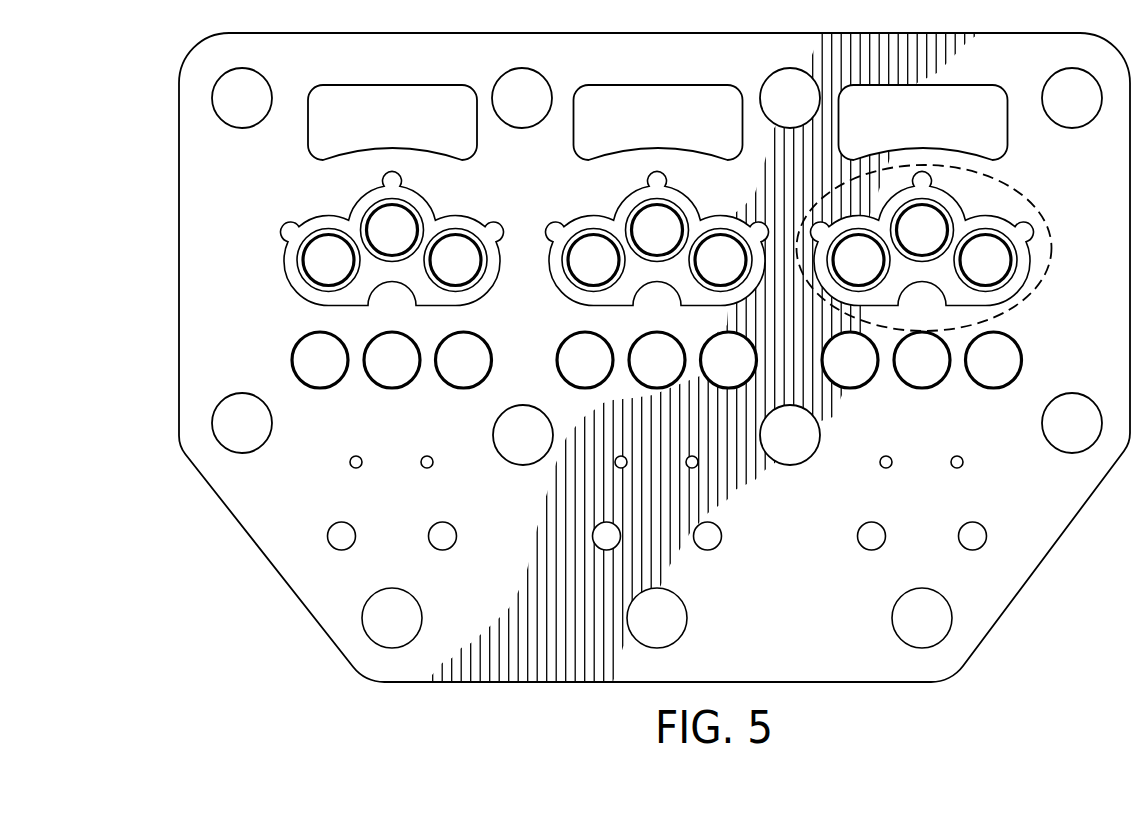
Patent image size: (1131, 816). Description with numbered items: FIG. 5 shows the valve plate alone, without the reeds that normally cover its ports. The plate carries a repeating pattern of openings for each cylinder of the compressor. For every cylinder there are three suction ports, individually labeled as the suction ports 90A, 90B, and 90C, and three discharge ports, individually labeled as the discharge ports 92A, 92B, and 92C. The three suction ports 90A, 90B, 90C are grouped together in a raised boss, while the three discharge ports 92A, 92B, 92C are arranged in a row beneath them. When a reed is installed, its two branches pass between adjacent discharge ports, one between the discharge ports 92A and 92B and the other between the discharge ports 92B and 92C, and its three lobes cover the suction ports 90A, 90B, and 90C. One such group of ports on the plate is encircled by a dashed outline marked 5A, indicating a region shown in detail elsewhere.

The suction port 90A is at (326, 263).
The suction port 90B is at (392, 230).
The suction port 90C is at (457, 262).
The discharge port 92A is at (322, 356).
The discharge port 92B is at (393, 358).
The discharge port 92C is at (463, 358).
The detail region 5A is at (1012, 189).